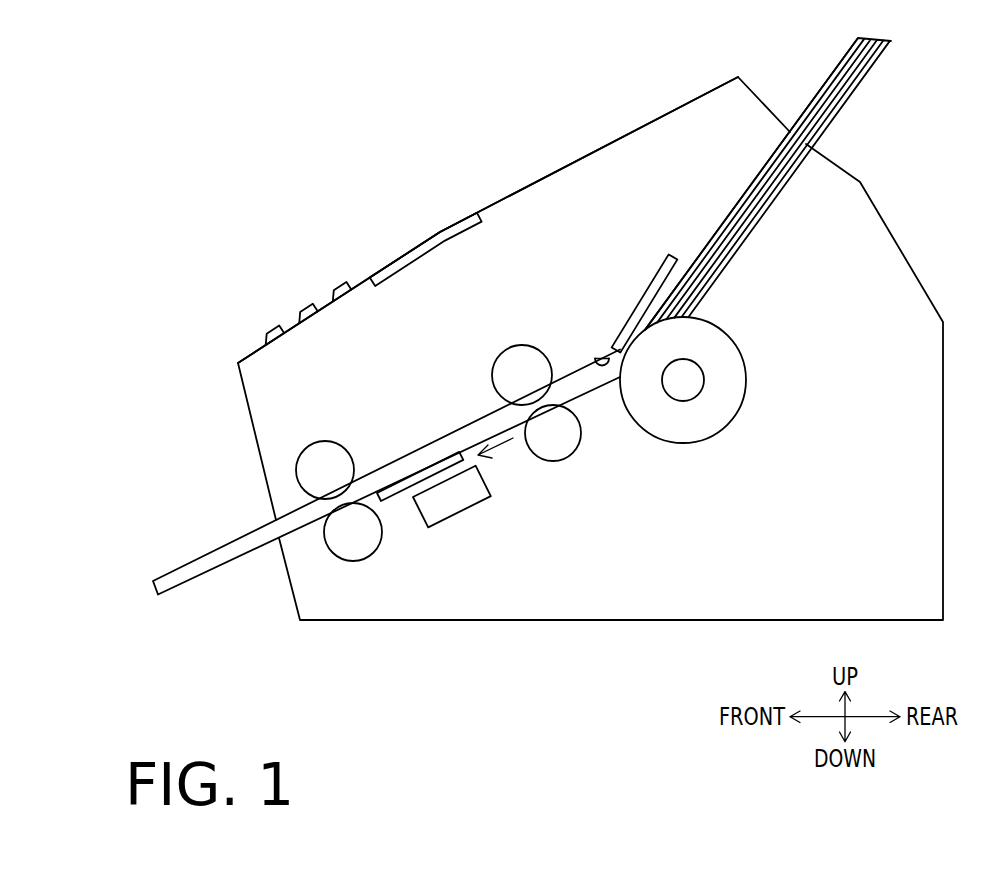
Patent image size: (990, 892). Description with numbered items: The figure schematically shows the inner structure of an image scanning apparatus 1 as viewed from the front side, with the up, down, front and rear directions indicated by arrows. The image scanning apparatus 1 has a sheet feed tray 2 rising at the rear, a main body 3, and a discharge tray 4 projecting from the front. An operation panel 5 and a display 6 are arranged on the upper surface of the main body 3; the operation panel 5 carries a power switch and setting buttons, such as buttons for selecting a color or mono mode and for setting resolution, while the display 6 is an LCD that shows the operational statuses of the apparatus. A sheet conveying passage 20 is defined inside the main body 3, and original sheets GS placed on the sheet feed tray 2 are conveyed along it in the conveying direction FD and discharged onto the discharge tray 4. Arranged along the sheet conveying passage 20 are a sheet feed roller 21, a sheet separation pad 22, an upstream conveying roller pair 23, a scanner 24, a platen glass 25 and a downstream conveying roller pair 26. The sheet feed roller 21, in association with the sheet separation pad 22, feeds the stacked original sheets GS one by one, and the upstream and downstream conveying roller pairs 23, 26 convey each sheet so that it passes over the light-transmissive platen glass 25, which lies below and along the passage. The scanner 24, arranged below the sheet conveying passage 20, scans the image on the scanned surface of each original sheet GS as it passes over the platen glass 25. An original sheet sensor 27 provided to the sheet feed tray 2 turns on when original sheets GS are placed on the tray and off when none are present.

The image scanning apparatus 1 is at (270, 115).
The sheet feed tray 2 is at (865, 75).
The main body 3 is at (513, 187).
The discharge tray 4 is at (218, 563).
The operation panel 5 is at (287, 280).
The display 6 is at (397, 228).
The sheet conveying passage 20 is at (607, 357).
The sheet feed roller 21 is at (735, 388).
The sheet separation pad 22 is at (662, 270).
The upstream conveying roller pair 23 is at (537, 367).
The scanner 24 is at (452, 505).
The platen glass 25 is at (393, 488).
The downstream conveying roller pair 26 is at (325, 470).
The original sheet sensor 27 is at (612, 283).
The original sheet GS is at (828, 80).
The conveying direction FD is at (513, 486).